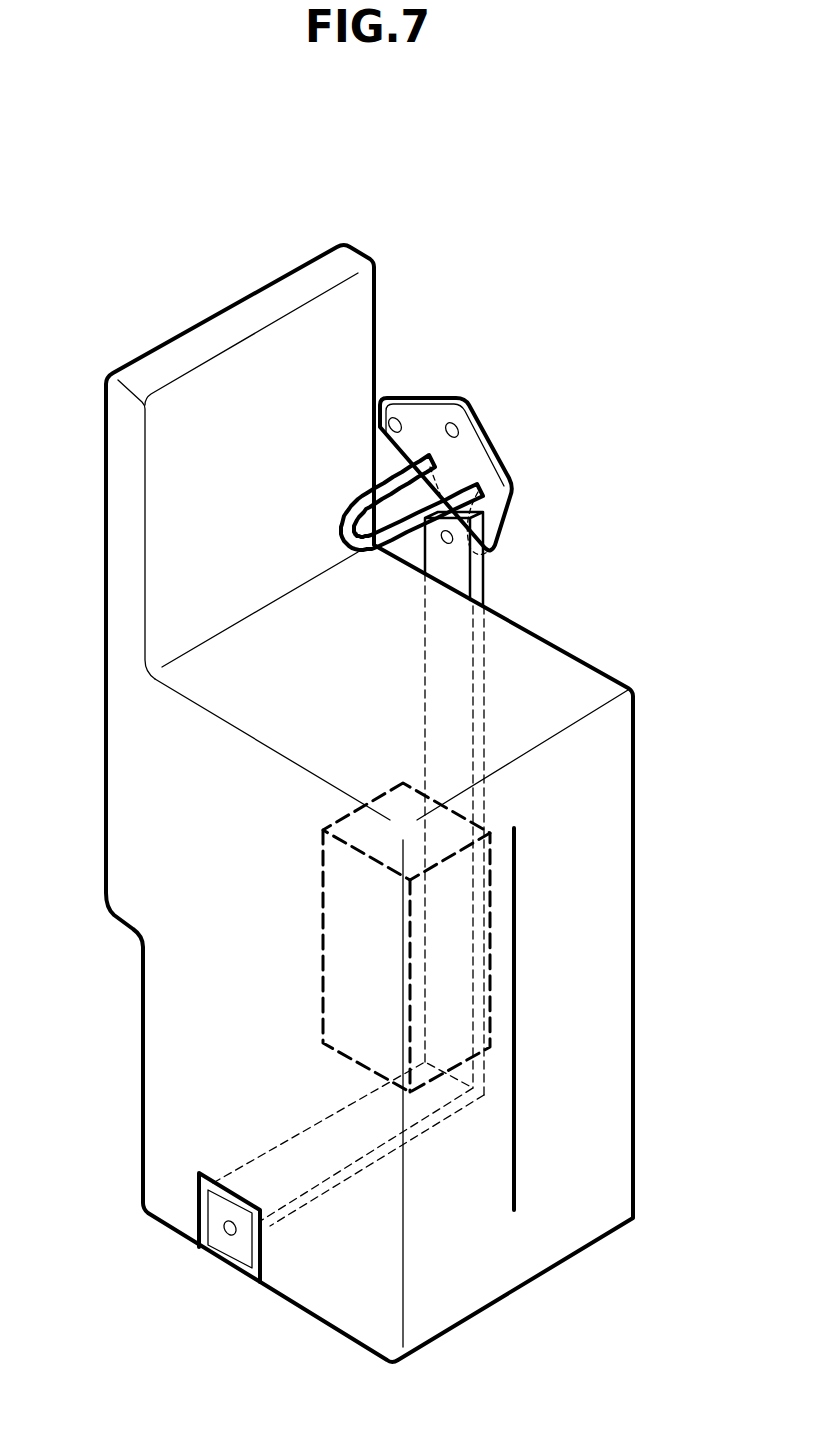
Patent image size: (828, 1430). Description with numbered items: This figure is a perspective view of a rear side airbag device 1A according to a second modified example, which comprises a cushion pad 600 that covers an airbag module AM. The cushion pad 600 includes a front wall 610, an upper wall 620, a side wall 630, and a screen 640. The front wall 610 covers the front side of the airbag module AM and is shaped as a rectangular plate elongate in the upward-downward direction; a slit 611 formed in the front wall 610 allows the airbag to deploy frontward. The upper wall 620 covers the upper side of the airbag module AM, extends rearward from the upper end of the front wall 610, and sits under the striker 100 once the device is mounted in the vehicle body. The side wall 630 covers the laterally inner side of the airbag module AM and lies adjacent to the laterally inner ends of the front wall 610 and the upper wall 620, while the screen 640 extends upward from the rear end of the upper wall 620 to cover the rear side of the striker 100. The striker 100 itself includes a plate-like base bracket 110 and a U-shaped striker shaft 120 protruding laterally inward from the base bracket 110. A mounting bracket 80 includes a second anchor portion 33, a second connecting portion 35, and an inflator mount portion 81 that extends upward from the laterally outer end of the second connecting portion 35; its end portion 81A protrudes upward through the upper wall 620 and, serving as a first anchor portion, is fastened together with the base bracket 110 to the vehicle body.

The rear side airbag device 1A is at (549, 301).
The striker 100 is at (475, 393).
The base bracket 110 is at (466, 469).
The striker shaft 120 is at (340, 518).
The cushion pad 600 is at (530, 1301).
The front wall 610 is at (578, 1007).
The slit 611 is at (515, 885).
The upper wall 620 is at (548, 675).
The side wall 630 is at (205, 855).
The screen 640 is at (200, 455).
The mounting bracket 80 is at (500, 798).
The inflator mount portion 81 is at (477, 752).
The end portion 81A is at (484, 558).
The second anchor portion 33 is at (237, 1247).
The second connecting portion 35 is at (327, 1180).
The airbag module AM is at (323, 1002).